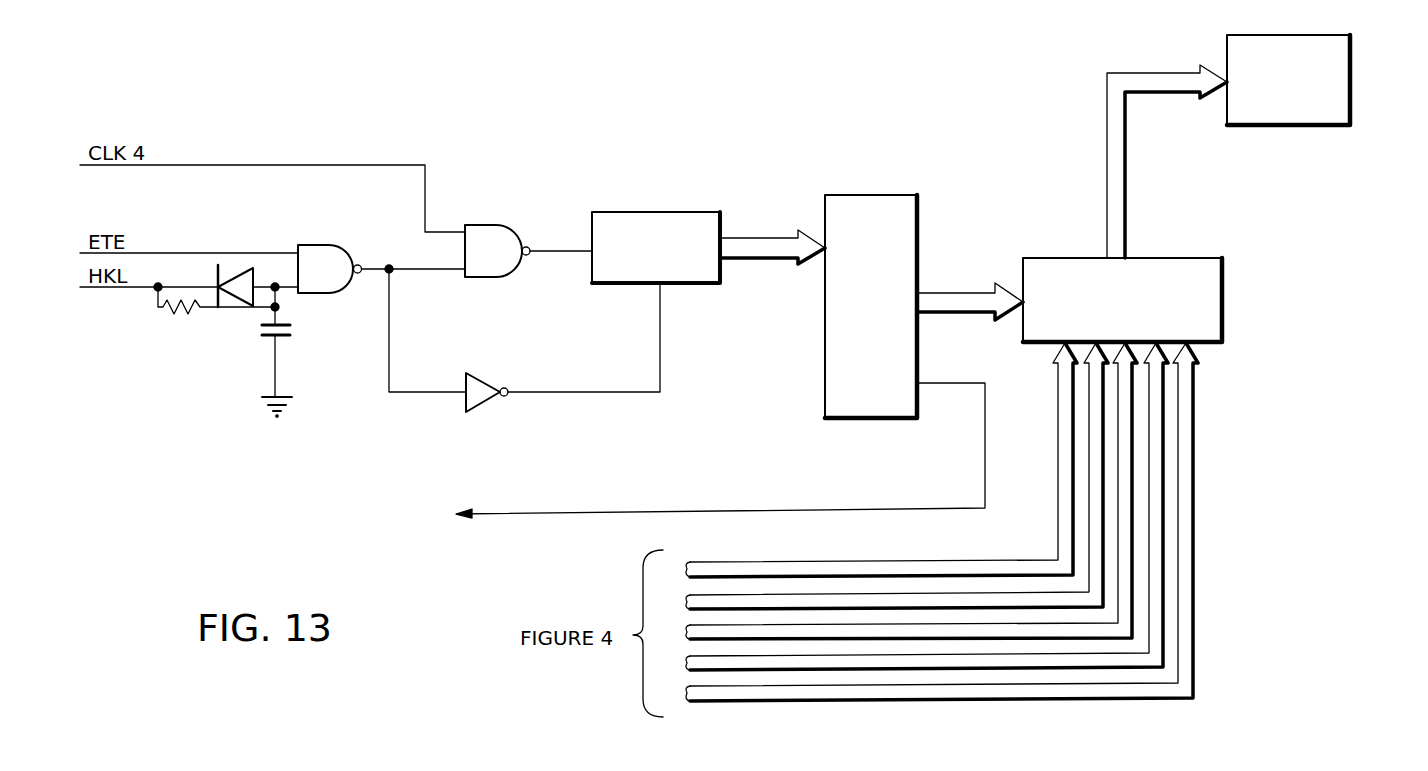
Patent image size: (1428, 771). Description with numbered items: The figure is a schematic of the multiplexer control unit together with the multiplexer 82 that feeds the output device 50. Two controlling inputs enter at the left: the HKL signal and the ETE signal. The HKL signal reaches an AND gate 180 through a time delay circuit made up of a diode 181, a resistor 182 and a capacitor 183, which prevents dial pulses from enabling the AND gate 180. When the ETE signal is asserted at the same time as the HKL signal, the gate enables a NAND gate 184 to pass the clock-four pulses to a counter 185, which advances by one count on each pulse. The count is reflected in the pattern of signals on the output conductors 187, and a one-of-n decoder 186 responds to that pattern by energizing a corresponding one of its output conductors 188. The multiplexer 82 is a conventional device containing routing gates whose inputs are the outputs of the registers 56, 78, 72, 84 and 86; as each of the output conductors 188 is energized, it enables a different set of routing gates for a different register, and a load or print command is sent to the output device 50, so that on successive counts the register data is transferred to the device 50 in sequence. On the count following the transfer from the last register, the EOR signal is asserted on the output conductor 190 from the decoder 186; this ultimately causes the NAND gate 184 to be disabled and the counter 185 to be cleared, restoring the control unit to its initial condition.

The output device 50 is at (1352, 58).
The register 56 is at (864, 464).
The register 72 is at (894, 496).
The register 78 is at (880, 479).
The multiplexer 82 is at (1222, 296).
The register 84 is at (910, 511).
The register 86 is at (925, 526).
The AND gate 180 is at (334, 260).
The diode 181 is at (230, 278).
The resistor 182 is at (190, 313).
The capacitor 183 is at (290, 325).
The NAND gate 184 is at (500, 234).
The counter 185 is at (663, 212).
The 1 of n decoder 186 is at (833, 383).
The output conductors 187 is at (748, 243).
The output conductors 188 is at (940, 297).
The output conductor 190 is at (586, 513).